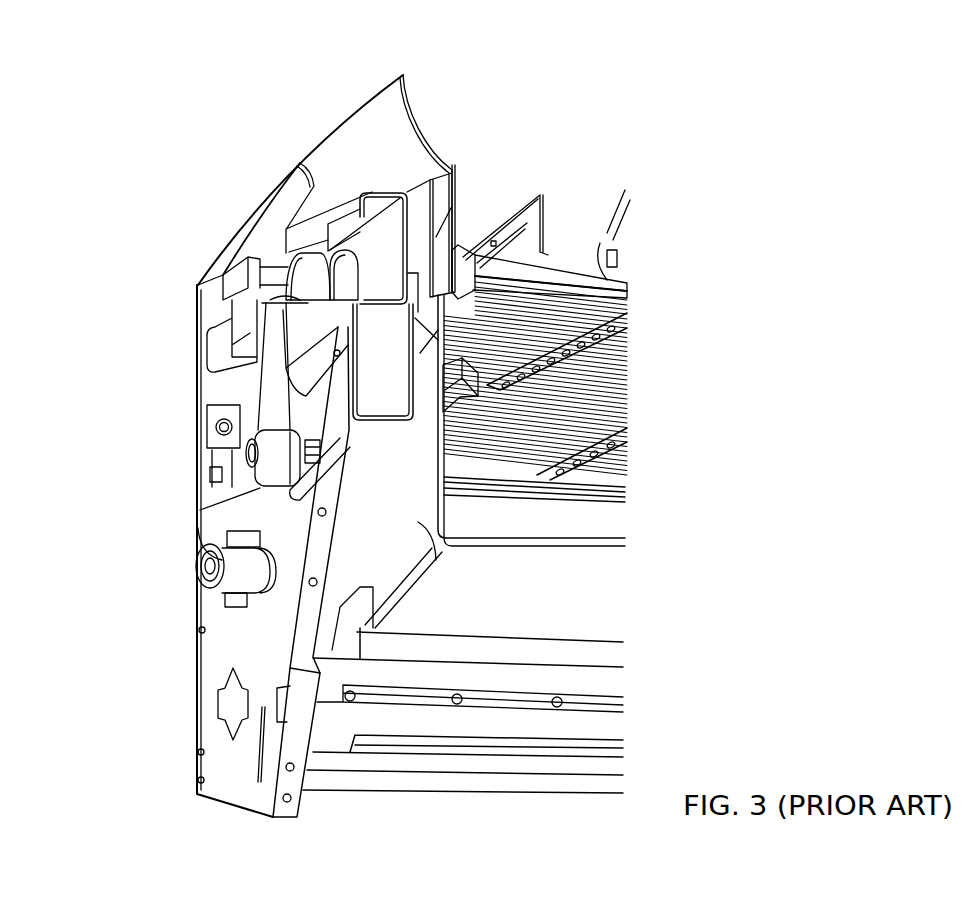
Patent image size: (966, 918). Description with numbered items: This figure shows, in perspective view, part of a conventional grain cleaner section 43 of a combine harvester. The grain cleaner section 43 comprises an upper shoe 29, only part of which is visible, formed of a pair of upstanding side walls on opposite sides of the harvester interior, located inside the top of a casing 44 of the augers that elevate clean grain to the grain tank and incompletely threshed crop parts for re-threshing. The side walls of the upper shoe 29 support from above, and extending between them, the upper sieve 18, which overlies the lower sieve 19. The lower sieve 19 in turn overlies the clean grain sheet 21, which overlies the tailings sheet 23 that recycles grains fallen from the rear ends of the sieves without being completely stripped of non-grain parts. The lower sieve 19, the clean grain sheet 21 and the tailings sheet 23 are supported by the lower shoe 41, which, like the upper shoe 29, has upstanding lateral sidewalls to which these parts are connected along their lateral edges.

The upper sieve 18 is at (627, 290).
The lower sieve 19 is at (620, 402).
The clean grain sheet 21 is at (617, 488).
The tailings sheet 23 is at (628, 548).
The upper shoe 29 is at (453, 178).
The lower shoe 41 is at (428, 540).
The grain cleaner section 43 is at (158, 488).
The casing 44 is at (235, 648).